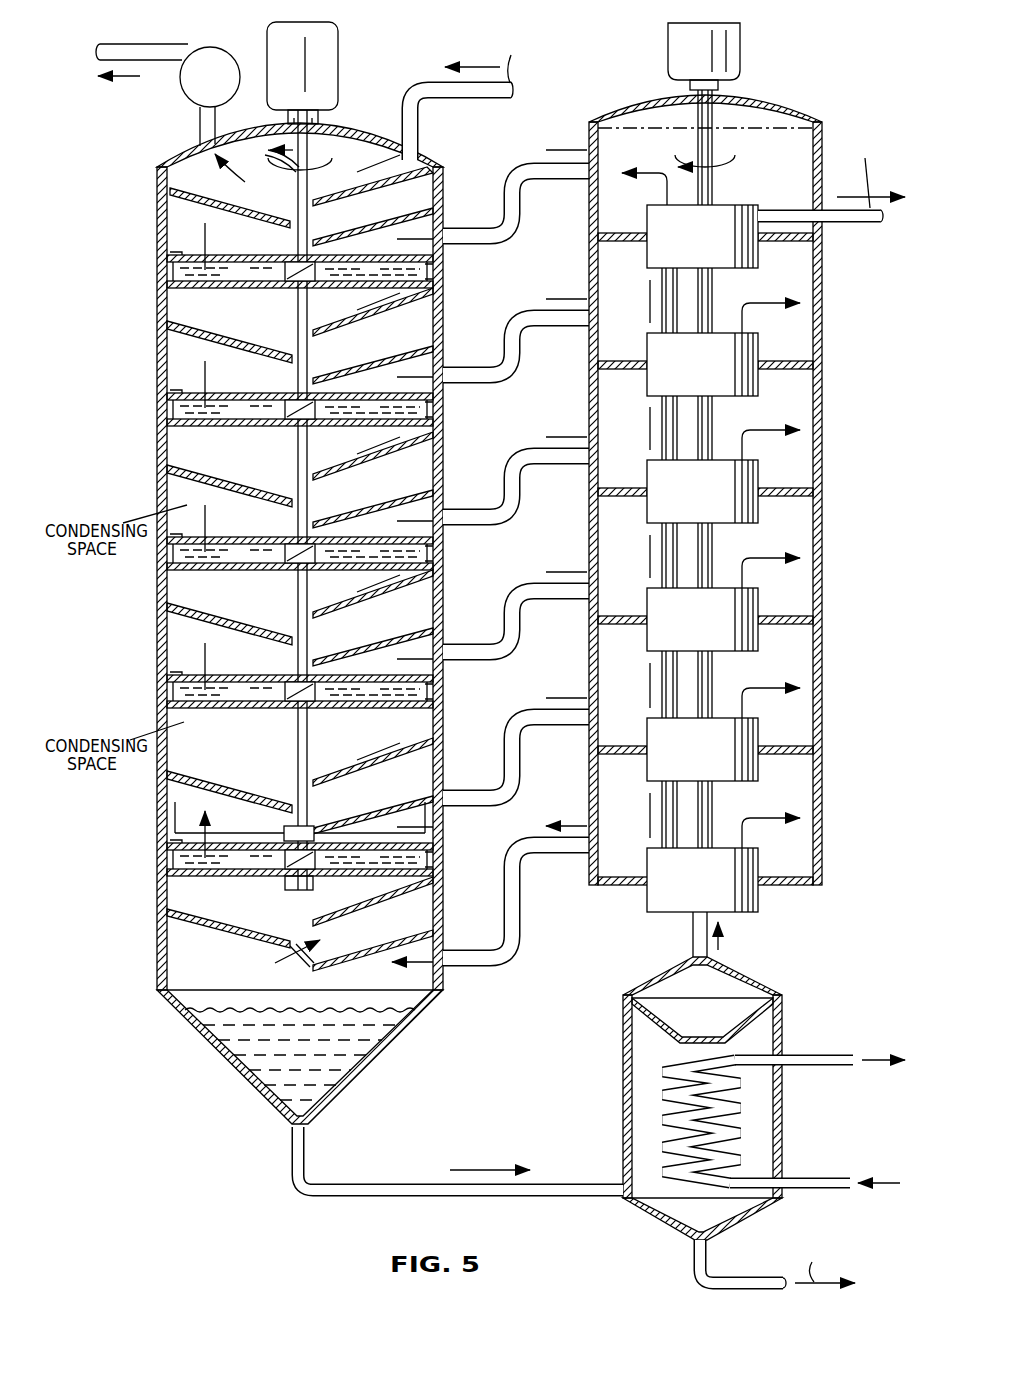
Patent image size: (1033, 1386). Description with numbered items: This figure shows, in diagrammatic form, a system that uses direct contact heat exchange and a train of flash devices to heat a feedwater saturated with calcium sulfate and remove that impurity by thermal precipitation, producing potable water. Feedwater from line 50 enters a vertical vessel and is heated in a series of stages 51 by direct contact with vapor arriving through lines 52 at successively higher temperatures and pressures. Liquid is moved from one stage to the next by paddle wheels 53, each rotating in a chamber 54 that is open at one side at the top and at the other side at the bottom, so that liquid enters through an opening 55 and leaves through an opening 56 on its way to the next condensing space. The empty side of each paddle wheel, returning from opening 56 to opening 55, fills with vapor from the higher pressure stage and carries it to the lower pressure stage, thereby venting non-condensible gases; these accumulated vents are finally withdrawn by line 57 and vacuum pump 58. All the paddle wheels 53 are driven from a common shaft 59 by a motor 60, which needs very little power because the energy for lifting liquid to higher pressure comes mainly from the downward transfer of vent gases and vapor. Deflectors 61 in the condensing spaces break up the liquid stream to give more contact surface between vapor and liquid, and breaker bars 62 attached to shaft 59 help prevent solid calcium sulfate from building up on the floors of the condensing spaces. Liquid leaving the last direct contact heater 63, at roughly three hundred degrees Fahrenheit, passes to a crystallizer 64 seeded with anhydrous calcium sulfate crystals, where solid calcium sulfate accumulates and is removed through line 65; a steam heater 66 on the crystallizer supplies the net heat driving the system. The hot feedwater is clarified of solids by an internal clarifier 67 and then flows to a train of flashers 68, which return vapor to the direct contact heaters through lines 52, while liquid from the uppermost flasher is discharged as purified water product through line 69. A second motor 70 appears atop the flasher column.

The feedwater line 50 is at (432, 92).
The stages 51 is at (183, 222).
The vapor lines 52 is at (497, 227).
The paddle wheels 53 is at (190, 274).
The chamber 54 is at (267, 268).
The opening 55 is at (182, 255).
The opening 56 is at (443, 292).
The vent line 57 is at (207, 125).
The vacuum pump 58 is at (188, 93).
The common shaft 59 is at (300, 170).
The motor 60 is at (315, 62).
The deflectors 61 is at (320, 375).
The breaker bars 62 is at (235, 838).
The last direct contact heater 63 is at (195, 955).
The crystallizer 64 is at (622, 1073).
The line 65 is at (693, 1270).
The heater 66 is at (663, 1121).
The internal clarifier 67 is at (718, 983).
The flashers 68 is at (740, 230).
The product line 69 is at (858, 222).
The condenser motor 70 is at (720, 52).